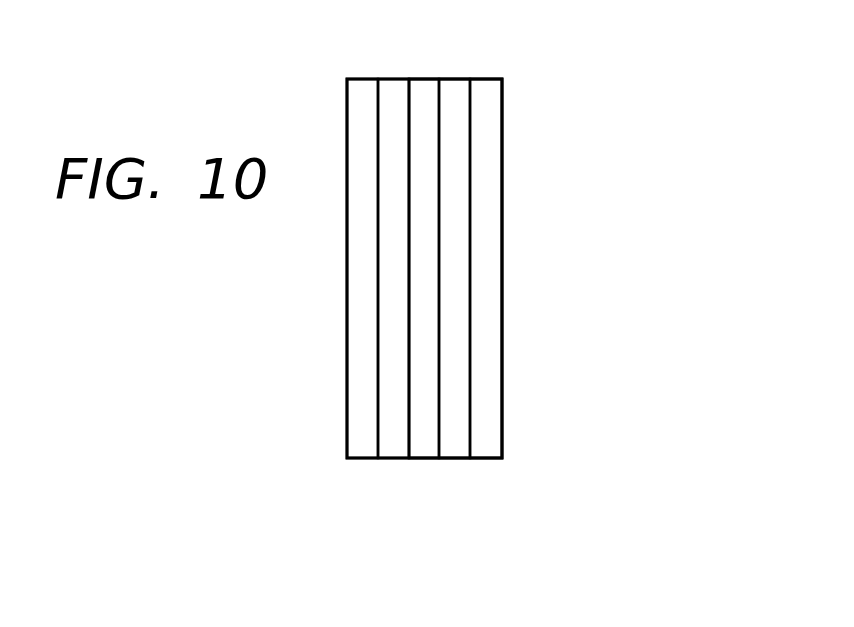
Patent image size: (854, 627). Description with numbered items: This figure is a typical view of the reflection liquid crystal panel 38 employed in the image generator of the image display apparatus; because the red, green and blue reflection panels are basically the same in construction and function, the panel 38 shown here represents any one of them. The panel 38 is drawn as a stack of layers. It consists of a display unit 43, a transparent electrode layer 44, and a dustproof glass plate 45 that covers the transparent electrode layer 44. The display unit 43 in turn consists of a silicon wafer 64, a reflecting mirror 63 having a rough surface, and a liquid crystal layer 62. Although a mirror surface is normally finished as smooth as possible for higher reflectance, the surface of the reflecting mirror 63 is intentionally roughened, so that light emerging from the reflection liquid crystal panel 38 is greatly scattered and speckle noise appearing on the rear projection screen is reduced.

The reflection liquid crystal panel 38 is at (427, 79).
The dustproof glass plate 45 is at (360, 452).
The transparent electrode layer 44 is at (393, 452).
The liquid crystal layer 62 is at (427, 452).
The reflecting mirror 63 is at (457, 452).
The silicon wafer 64 is at (487, 452).
The display unit 43 is at (555, 548).